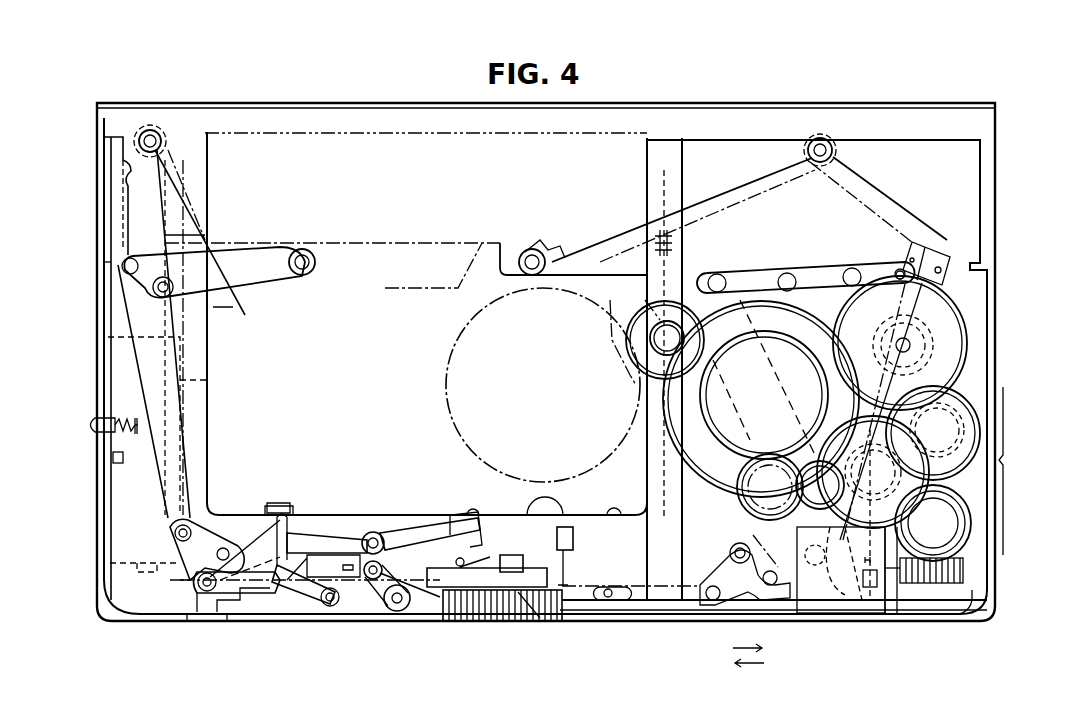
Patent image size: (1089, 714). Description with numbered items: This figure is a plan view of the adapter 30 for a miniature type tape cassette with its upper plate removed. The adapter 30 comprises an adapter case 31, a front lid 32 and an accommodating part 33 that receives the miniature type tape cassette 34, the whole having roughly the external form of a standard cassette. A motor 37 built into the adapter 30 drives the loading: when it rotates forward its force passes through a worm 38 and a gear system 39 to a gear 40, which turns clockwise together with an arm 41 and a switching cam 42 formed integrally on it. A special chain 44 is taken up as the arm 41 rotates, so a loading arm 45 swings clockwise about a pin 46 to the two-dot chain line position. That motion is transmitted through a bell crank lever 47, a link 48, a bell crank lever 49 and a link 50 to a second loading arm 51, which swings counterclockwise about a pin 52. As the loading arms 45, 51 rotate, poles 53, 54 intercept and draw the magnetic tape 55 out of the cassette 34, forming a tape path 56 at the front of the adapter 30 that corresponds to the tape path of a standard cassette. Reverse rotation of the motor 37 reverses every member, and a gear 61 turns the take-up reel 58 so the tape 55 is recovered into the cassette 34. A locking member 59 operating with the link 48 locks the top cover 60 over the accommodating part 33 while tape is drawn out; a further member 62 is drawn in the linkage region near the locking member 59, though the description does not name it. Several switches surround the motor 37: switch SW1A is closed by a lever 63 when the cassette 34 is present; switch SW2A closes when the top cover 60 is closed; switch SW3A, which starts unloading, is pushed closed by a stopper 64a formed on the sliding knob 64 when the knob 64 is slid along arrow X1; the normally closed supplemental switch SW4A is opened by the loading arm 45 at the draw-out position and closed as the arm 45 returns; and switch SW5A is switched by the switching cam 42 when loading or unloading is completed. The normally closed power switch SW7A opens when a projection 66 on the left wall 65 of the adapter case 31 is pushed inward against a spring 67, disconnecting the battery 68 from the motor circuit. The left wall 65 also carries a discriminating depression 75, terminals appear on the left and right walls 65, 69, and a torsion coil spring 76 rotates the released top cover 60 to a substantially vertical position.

The adapter 30 is at (402, 88).
The adapter case 31 is at (693, 612).
The front lid 32 is at (940, 103).
The accommodating part 33 is at (622, 514).
The miniature type tape cassette 34 is at (640, 455).
The motor 37 is at (862, 600).
The worm 38 is at (935, 583).
The gear system 39 is at (1017, 471).
The gear 40 is at (935, 345).
The arm 41 is at (895, 335).
The switching cam 42 is at (960, 328).
The special chain 44 is at (805, 270).
The loading arm 45 is at (893, 190).
The pin 46 is at (847, 570).
The bell crank lever 47 is at (698, 583).
The link 48 is at (596, 588).
The bell crank lever 49 is at (222, 540).
The link 50 is at (148, 374).
The loading arm 51 is at (135, 197).
The pin 52 is at (153, 370).
The pole 53 is at (826, 140).
The pole 54 is at (145, 133).
The magnetic tape 55 is at (190, 215).
The tape path 56 is at (664, 140).
The take-up reel 58 is at (446, 383).
The locking member 59 is at (375, 608).
The top cover 60 is at (715, 497).
The gear 61 is at (640, 368).
The lever 62 is at (310, 597).
The lever 63 is at (462, 525).
The sliding knob 64 is at (500, 618).
The stopper 64a is at (538, 618).
The left wall 65 is at (110, 300).
The projection 66 is at (96, 420).
The spring 67 is at (128, 440).
The battery 68 is at (212, 373).
The right wall 69 is at (993, 388).
The depression 75 is at (109, 256).
The torsion coil spring 76 is at (662, 228).
The switch SW1A is at (490, 563).
The switch SW2A is at (345, 560).
The switch SW3A is at (573, 560).
The supplemental switch SW4A is at (875, 600).
The switch SW5A is at (940, 262).
The switch SW7A is at (112, 456).